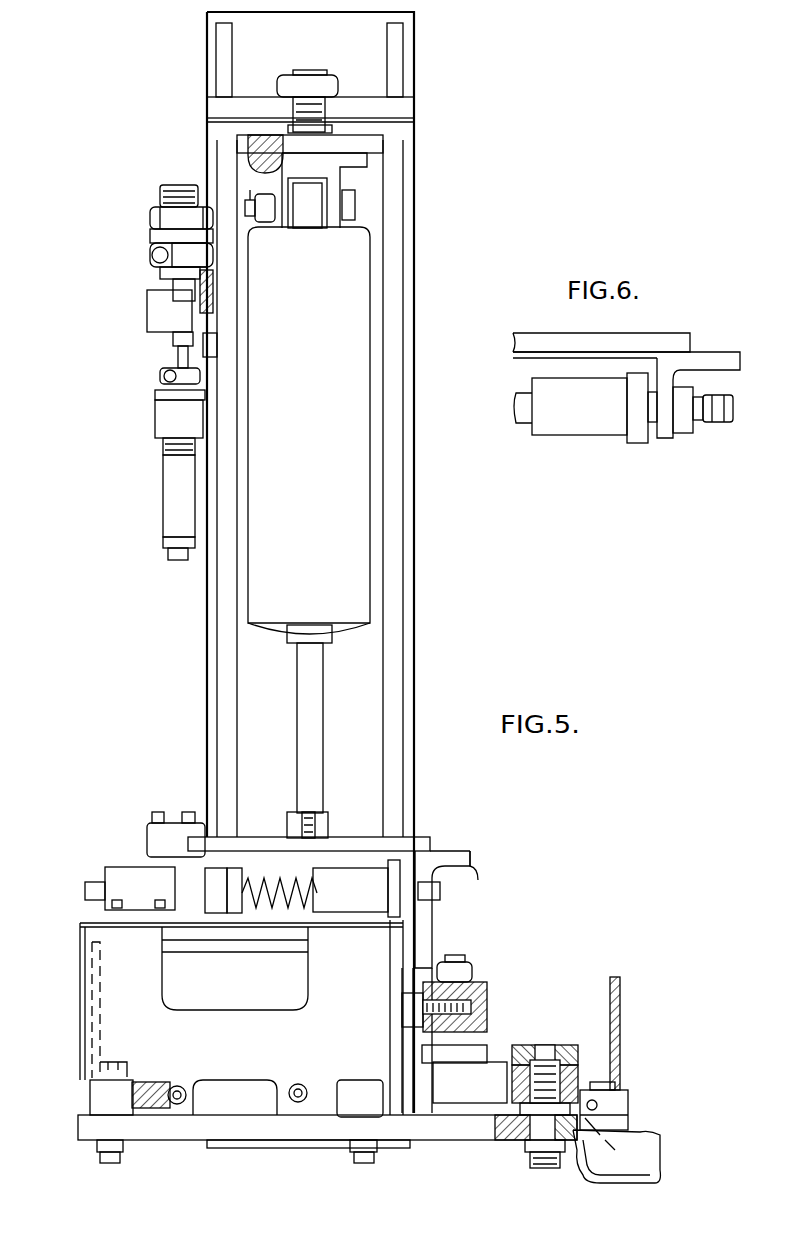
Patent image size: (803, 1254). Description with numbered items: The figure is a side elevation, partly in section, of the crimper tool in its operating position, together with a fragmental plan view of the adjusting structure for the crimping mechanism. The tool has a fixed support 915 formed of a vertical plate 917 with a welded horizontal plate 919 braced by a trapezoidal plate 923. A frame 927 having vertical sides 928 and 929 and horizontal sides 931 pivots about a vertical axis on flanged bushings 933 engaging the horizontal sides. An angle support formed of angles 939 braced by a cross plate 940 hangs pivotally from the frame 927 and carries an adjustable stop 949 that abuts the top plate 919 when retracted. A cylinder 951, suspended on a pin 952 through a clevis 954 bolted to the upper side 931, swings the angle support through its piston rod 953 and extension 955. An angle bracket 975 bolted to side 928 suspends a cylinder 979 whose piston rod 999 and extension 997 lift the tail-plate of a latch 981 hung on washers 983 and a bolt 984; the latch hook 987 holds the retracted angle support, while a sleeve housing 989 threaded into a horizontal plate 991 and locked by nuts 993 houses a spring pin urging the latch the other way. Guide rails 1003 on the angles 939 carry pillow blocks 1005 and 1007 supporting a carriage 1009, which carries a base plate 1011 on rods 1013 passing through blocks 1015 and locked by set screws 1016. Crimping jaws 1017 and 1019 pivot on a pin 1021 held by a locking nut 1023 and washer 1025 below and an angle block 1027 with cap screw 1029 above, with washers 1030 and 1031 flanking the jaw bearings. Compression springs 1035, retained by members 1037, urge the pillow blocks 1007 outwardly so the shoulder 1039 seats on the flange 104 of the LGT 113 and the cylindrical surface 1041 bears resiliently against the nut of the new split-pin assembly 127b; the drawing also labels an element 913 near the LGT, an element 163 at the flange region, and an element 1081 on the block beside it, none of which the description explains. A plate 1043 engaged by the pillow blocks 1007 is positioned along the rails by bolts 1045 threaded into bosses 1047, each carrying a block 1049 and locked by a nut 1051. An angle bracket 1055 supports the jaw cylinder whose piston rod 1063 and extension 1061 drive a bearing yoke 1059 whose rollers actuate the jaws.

In FIG. 5, the support 915 is at (420, 598).
In FIG. 5, the vertical plate 917 is at (412, 686).
In FIG. 5, the horizontal plate 919 is at (403, 60).
In FIG. 5, the trapezoidal plate 923 is at (402, 108).
In FIG. 5, the frame 927 is at (207, 686).
In FIG. 5, the vertical side 928 is at (222, 602).
In FIG. 5, the vertical side 929 is at (385, 660).
In FIG. 5, the horizontal side 931 is at (372, 152).
In FIG. 5, the flanged bushing 933 is at (333, 130).
In FIG. 5, the angle 939 is at (435, 848).
In FIG. 6, the angle 939 is at (707, 355).
In FIG. 5, the cross plate 940 is at (256, 838).
In FIG. 6, the cross plate 940 is at (672, 340).
In FIG. 5, the adjustable stop 949 is at (300, 815).
In FIG. 5, the cylinder 951 is at (372, 268).
In FIG. 5, the pin 952 is at (245, 208).
In FIG. 5, the piston rod 953 is at (345, 740).
In FIG. 5, the clevis 954 is at (336, 186).
In FIG. 5, the piston-rod extension 955 is at (325, 820).
In FIG. 5, the angle bracket 975 is at (150, 395).
In FIG. 5, the cylinder 979 is at (170, 488).
In FIG. 5, the latch 981 is at (142, 324).
In FIG. 5, the washer 983 is at (213, 288).
In FIG. 5, the bolt 984 is at (173, 286).
In FIG. 5, the hook 987 is at (175, 298).
In FIG. 5, the sleeve housing 989 is at (160, 195).
In FIG. 5, the horizontal plate 991 is at (157, 237).
In FIG. 5, the nut 993 is at (150, 258).
In FIG. 5, the extension 997 is at (170, 340).
In FIG. 5, the piston rod 999 is at (188, 352).
In FIG. 5, the guide rail 1003 is at (222, 915).
In FIG. 6, the guide rail 1003 is at (520, 403).
In FIG. 5, the pillow block 1005 is at (130, 875).
In FIG. 5, the pillow block 1007 is at (355, 868).
In FIG. 6, the pillow block 1007 is at (550, 420).
In FIG. 5, the carriage 1009 is at (122, 1020).
In FIG. 5, the base plate 1011 is at (175, 1142).
In FIG. 5, the rod 1013 is at (294, 1085).
In FIG. 5, the block 1015 is at (162, 1086).
In FIG. 5, the set screw 1016 is at (140, 1082).
In FIG. 5, the crimping jaw 1017 is at (507, 1072).
In FIG. 5, the crimping jaw 1019 is at (410, 1080).
In FIG. 5, the pin 1021 is at (525, 1125).
In FIG. 5, the locking nut 1023 is at (540, 1150).
In FIG. 5, the washer 1025 is at (565, 1140).
In FIG. 5, the angle block 1027 is at (517, 1046).
In FIG. 5, the cap screw 1029 is at (555, 1060).
In FIG. 5, the washer 1030 is at (596, 1090).
In FIG. 5, the washer 1031 is at (510, 1110).
In FIG. 5, the compression spring 1035 is at (305, 912).
In FIG. 5, the member 1037 is at (237, 914).
In FIG. 5, the shoulder 1039 is at (650, 1175).
In FIG. 5, the cylindrical surface 1041 is at (600, 1140).
In FIG. 5, the plate 1043 is at (395, 882).
In FIG. 6, the plate 1043 is at (635, 442).
In FIG. 6, the bolt 1045 is at (725, 398).
In FIG. 6, the boss 1047 is at (683, 433).
In FIG. 6, the block 1049 is at (650, 422).
In FIG. 6, the nut 1051 is at (700, 420).
In FIG. 5, the angle bracket 1055 is at (97, 975).
In FIG. 5, the bearing yoke 1059 is at (485, 992).
In FIG. 5, the extension 1061 is at (470, 975).
In FIG. 5, the piston rod 1063 is at (408, 1010).
In FIG. 5, the hole 1081 is at (597, 1105).
In FIG. 5, the LGT 113 is at (622, 980).
In FIG. 5, the bar 913 is at (617, 1045).
In FIG. 5, the new split-pin assembly 127b is at (612, 1080).
In FIG. 5, the bracket 163 is at (640, 1138).
In FIG. 5, the flange 104 is at (645, 1183).